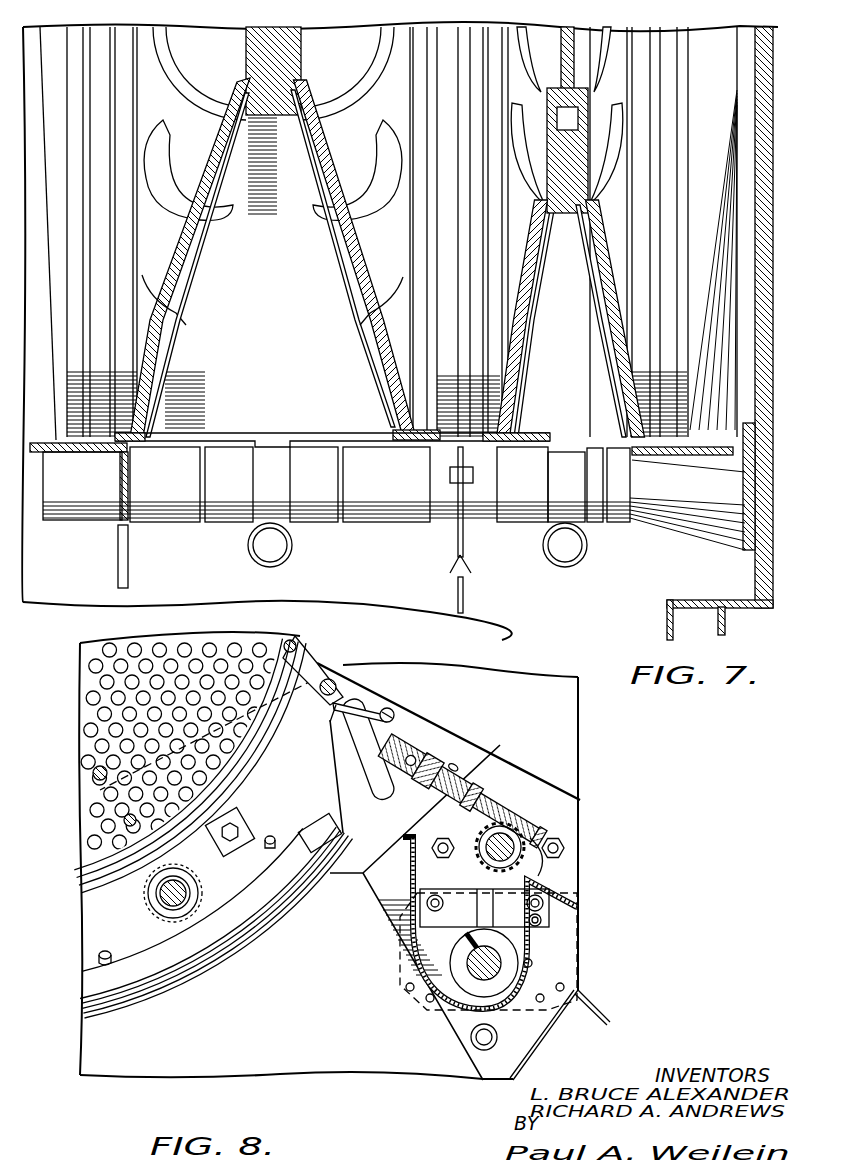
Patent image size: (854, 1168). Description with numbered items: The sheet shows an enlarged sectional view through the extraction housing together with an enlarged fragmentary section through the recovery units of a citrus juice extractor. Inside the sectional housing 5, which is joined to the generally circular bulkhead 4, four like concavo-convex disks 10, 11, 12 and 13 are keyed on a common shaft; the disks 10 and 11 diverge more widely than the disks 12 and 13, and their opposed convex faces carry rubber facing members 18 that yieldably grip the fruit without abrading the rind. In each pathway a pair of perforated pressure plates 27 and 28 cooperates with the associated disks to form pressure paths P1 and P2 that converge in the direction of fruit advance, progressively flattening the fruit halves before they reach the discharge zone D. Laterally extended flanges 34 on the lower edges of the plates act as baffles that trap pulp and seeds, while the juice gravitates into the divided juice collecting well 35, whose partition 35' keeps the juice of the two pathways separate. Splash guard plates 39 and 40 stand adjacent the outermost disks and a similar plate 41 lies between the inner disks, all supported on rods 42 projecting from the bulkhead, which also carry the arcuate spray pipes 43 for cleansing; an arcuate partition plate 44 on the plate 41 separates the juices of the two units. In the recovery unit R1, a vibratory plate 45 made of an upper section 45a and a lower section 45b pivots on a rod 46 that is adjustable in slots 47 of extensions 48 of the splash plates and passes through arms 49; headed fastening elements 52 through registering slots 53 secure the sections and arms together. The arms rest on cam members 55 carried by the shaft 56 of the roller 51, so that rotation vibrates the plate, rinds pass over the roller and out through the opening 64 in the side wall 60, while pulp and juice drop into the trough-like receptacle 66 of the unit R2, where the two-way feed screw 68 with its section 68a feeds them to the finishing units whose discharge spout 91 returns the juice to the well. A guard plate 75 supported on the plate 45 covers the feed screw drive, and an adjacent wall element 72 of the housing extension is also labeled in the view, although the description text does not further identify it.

In FIG. 7, the bulkhead 4 is at (765, 320).
In FIG. 7, the sectional housing 5 is at (60, 600).
In FIG. 8, the sectional housing 5 is at (612, 877).
In FIG. 7, the concavo-convex disk 10 is at (165, 243).
In FIG. 7, the concavo-convex disk 11 is at (350, 147).
In FIG. 7, the concavo-convex disk 12 is at (512, 58).
In FIG. 7, the concavo-convex disk 13 is at (625, 58).
In FIG. 7, the rubber facing members 18 is at (220, 42).
In FIG. 7, the perforated pressure plate 27 is at (192, 291).
In FIG. 7, the perforated pressure plate 28 is at (350, 280).
In FIG. 7, the pressure path P1 is at (170, 326).
In FIG. 7, the pressure path P2 is at (385, 342).
In FIG. 7, the laterally extended flanges 34 is at (135, 444).
In FIG. 8, the laterally extended flanges 34 is at (98, 780).
In FIG. 8, the divided juice collecting well 35 is at (332, 1080).
In FIG. 7, the partition 35' is at (436, 595).
In FIG. 8, the partition 35' is at (331, 946).
In FIG. 7, the splash guard plate 39 is at (87, 455).
In FIG. 7, the splash guard plate 40 is at (702, 458).
In FIG. 7, the splash guard plate 41 is at (448, 470).
In FIG. 7, the rods 42 is at (333, 514).
In FIG. 8, the rods 42 is at (160, 905).
In FIG. 7, the arcuate spray pipes 43 is at (247, 547).
In FIG. 8, the arcuate spray pipes 43 is at (185, 950).
In FIG. 7, the arcuate partition plate 44 is at (456, 547).
In FIG. 8, the arcuate partition plate 44 is at (212, 742).
In FIG. 8, the vibratory plate 45 is at (470, 740).
In FIG. 8, the upper plate section 45a is at (475, 760).
In FIG. 8, the lower plate section 45b is at (485, 790).
In FIG. 8, the pivot rod 46 is at (362, 780).
In FIG. 8, the slots 47 is at (430, 745).
In FIG. 8, the extensions 48 is at (355, 792).
In FIG. 8, the arms 49 is at (500, 805).
In FIG. 8, the roller 51 is at (482, 870).
In FIG. 8, the headed fastening elements 52 is at (415, 735).
In FIG. 8, the registering slots 53 is at (390, 708).
In FIG. 8, the cam members 55 is at (476, 834).
In FIG. 8, the shaft 56 is at (483, 847).
In FIG. 8, the side wall 60 is at (562, 822).
In FIG. 8, the opening 64 is at (560, 812).
In FIG. 8, the trough-like receptacle 66 is at (410, 882).
In FIG. 8, the two-way feed screw 68 is at (495, 983).
In FIG. 8, the feed screw section 68a is at (455, 965).
In FIG. 8, the frame wall 72 is at (578, 705).
In FIG. 8, the guard plate 75 is at (548, 862).
In FIG. 8, the discharge spout 91 is at (470, 1040).
In FIG. 8, the discharge zone D is at (330, 665).
In FIG. 8, the juice and pulp recovery unit R1 is at (490, 765).
In FIG. 8, the pulp and juice recovery unit R2 is at (530, 942).